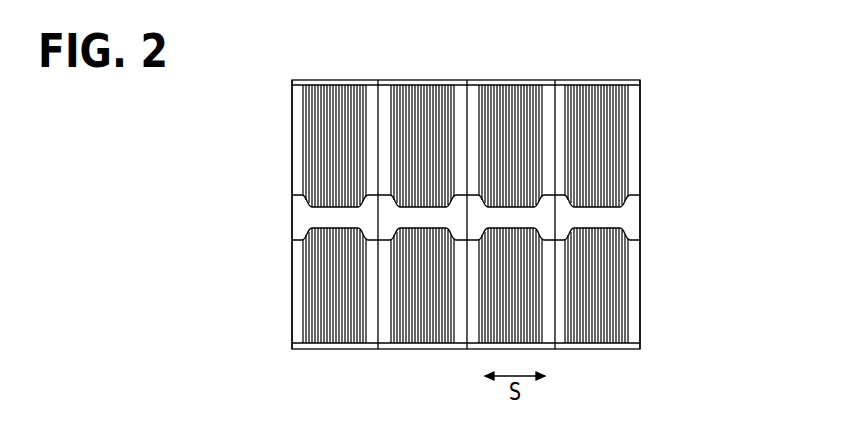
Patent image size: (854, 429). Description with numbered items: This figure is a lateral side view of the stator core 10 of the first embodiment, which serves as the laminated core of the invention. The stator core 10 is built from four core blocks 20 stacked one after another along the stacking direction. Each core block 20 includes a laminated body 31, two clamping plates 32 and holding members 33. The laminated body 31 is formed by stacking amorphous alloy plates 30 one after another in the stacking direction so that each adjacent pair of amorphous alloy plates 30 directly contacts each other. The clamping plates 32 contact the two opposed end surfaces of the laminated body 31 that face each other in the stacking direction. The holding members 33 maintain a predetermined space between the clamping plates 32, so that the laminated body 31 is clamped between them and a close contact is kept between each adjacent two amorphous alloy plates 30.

The stator core 10 is at (669, 54).
The core block 20 is at (336, 80).
The amorphous alloy plate 30 is at (607, 155).
The laminated body 31 is at (638, 183).
The clamping plate 32 is at (560, 265).
The holding member 33 is at (642, 82).